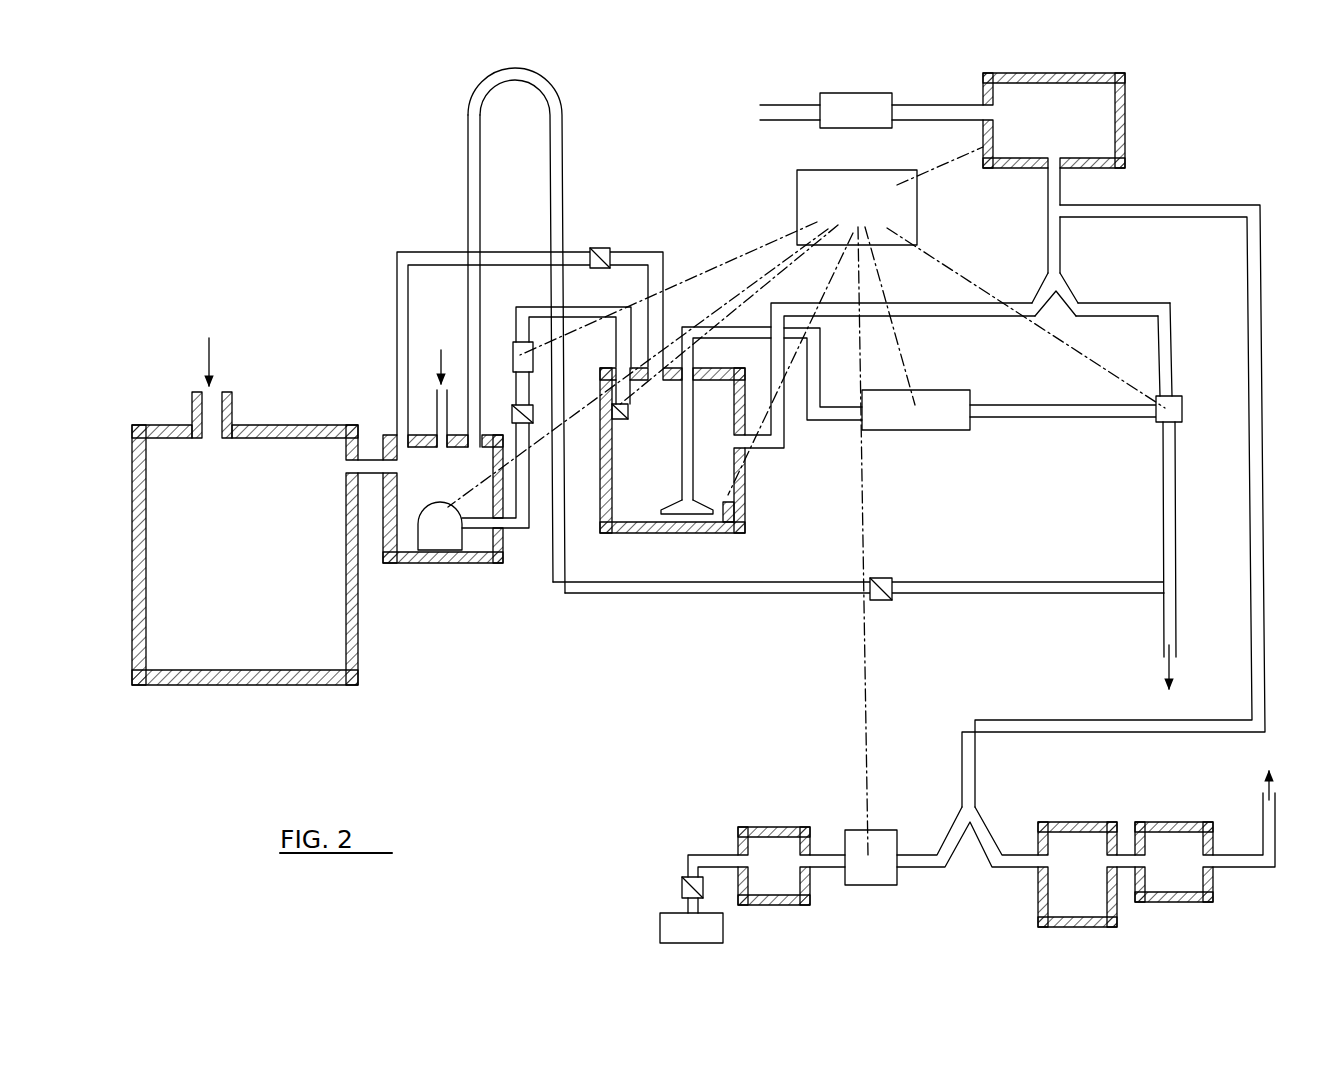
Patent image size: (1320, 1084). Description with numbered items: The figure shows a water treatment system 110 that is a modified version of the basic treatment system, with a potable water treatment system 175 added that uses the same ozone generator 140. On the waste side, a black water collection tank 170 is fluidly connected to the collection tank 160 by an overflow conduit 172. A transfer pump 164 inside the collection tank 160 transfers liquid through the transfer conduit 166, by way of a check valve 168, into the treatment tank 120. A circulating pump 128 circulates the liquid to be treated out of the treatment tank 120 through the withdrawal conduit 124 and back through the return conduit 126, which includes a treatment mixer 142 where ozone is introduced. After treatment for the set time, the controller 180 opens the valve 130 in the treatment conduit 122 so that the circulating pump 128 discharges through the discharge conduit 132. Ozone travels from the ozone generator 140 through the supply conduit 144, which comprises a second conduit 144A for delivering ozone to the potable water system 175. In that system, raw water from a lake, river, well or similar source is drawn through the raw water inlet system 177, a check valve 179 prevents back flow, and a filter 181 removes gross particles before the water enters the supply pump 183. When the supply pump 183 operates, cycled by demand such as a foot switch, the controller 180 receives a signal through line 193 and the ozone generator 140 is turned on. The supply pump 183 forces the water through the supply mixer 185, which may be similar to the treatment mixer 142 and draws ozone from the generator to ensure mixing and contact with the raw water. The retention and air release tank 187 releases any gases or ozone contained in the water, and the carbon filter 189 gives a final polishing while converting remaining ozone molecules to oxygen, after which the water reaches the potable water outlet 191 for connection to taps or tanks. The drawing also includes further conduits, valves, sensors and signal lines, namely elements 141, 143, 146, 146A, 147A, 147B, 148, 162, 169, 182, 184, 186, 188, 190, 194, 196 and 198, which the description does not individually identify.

The water treatment system 110 is at (575, 765).
The treatment tank 120 is at (650, 535).
The treatment conduit 122 is at (1178, 320).
The withdrawal conduit 124 is at (838, 422).
The return conduit 126 is at (933, 316).
The circulating pump 128 is at (930, 431).
The valve 130 is at (1184, 409).
The discharge conduit 132 is at (1180, 623).
The ozone generator 140 is at (1127, 120).
The inlet conduit 141 is at (758, 112).
The treatment mixer 142 is at (1078, 290).
The pump 143 is at (860, 129).
The supply conduit 144 is at (1062, 186).
The second conduit 144A is at (1178, 205).
The conduit 146 is at (578, 252).
The conduit 146A is at (1008, 582).
The valve 147A is at (605, 248).
The valve 147B is at (885, 578).
The conduit 148 is at (552, 80).
The collection tank 160 is at (415, 565).
The inlet 162 is at (433, 385).
The transfer pump 164 is at (440, 535).
The transfer conduit 166 is at (514, 535).
The check valve 168 is at (490, 445).
The sensor 169 is at (512, 345).
The black water collection tank 170 is at (256, 687).
The overflow conduit 172 is at (367, 455).
The potable water treatment system 175 is at (1022, 900).
The raw water inlet system 177 is at (660, 928).
The check valve 179 is at (680, 885).
The controller 180 is at (825, 180).
The filter 181 is at (773, 827).
The sensor 182 is at (620, 420).
The supply pump 183 is at (882, 887).
The signal line 184 is at (748, 306).
The supply mixer 185 is at (955, 853).
The signal line 186 is at (740, 292).
The retention and air release tank 187 is at (1090, 822).
The signal line 188 is at (697, 272).
The carbon filter 189 is at (1215, 885).
The signal line 190 is at (906, 352).
The potable water outlet 191 is at (1262, 810).
The line 193 is at (868, 700).
The signal line 194 is at (1080, 352).
The valve seat 196 is at (728, 525).
The valve 198 is at (750, 457).